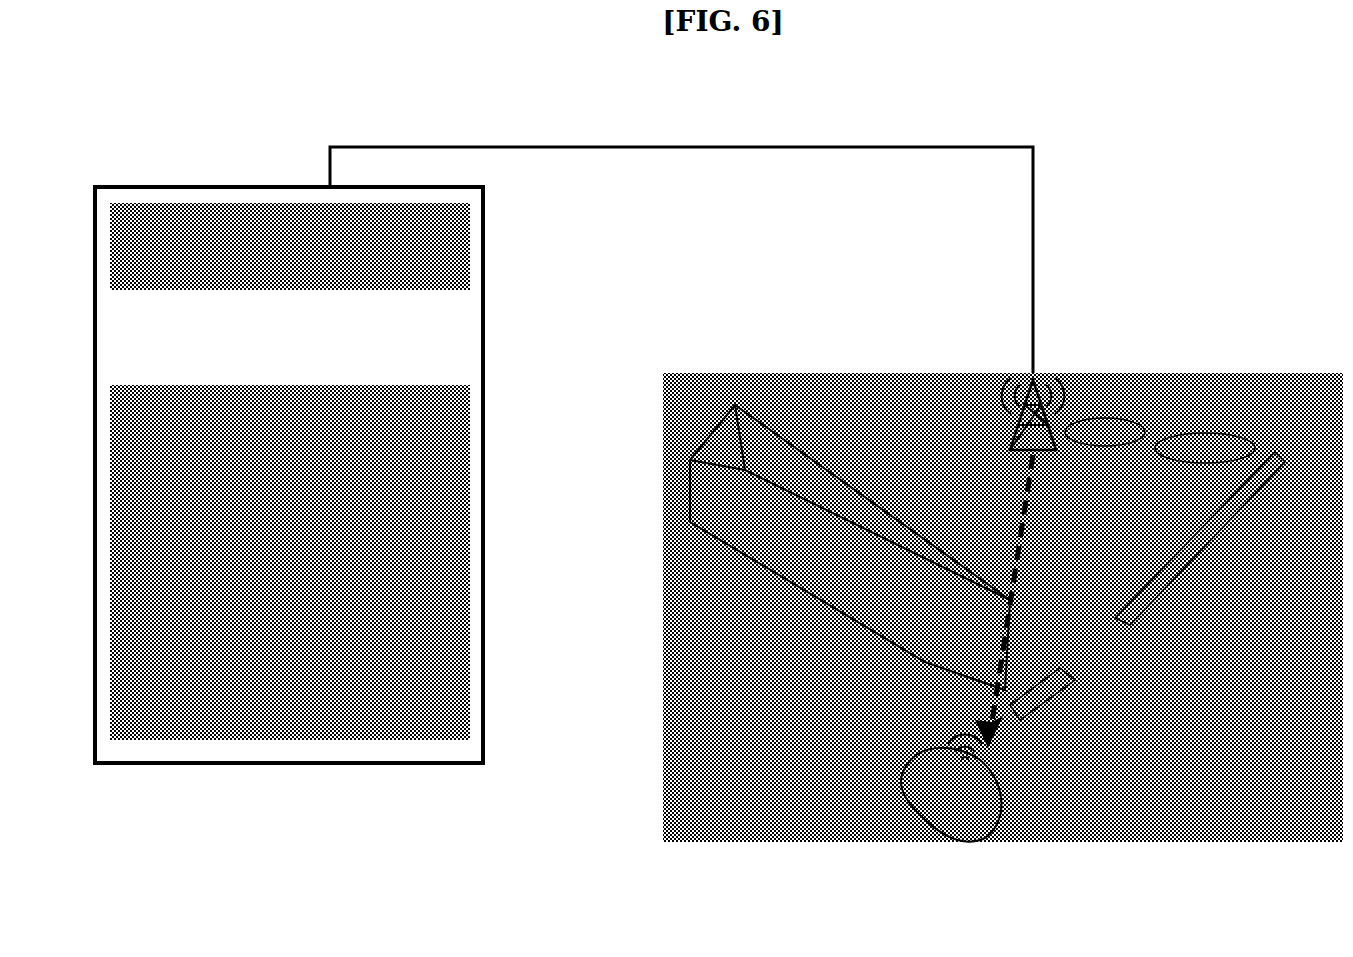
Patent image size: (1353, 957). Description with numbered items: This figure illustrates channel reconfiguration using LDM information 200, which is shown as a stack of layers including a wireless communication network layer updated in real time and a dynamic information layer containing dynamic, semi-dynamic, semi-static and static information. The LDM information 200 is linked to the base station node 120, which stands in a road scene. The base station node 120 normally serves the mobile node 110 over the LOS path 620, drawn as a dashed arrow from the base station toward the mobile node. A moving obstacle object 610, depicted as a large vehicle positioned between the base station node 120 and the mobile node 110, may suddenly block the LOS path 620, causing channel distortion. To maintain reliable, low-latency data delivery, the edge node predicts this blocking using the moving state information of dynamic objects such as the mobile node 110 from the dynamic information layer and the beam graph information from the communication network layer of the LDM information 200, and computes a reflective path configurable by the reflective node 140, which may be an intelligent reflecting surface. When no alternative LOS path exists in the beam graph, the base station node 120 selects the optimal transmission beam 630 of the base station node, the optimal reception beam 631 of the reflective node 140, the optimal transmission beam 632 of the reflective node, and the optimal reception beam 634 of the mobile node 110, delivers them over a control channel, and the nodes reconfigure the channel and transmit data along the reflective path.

The LDM information 200 is at (185, 187).
The reflective node 140 is at (1312, 437).
The moving obstacle object 610 is at (815, 618).
The base station node 120 is at (1030, 368).
The optimal transmission beam of the base station node 630 is at (1112, 415).
The optimal reception beam of the reflective node 631 is at (1199, 428).
The optimal transmission beam of the reflective node 632 is at (1197, 548).
The optimal reception beam of the mobile node 634 is at (1055, 695).
The mobile node 110 is at (975, 805).
The LOS path 620 is at (1012, 515).